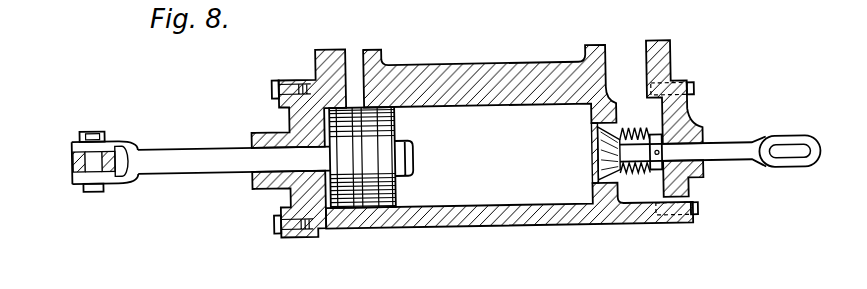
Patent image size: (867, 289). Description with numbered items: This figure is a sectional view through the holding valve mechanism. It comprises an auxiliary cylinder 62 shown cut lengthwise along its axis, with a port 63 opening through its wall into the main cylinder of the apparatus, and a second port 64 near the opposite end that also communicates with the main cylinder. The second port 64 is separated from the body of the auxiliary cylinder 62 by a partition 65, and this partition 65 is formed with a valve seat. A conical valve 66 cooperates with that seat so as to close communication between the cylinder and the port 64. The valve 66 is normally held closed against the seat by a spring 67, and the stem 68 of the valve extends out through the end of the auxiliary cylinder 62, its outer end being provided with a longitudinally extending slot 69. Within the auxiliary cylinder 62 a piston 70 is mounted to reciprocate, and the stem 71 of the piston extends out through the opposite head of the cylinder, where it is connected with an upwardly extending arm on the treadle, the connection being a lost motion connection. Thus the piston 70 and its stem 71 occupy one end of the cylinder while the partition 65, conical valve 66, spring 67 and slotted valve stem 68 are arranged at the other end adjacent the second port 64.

The auxiliary cylinder 62 is at (500, 224).
The port 63 is at (355, 56).
The second port 64 is at (629, 60).
The partition 65 is at (607, 115).
The conical valve 66 is at (595, 158).
The spring 67 is at (616, 178).
The stem 68 is at (731, 149).
The longitudinally extending slot 69 is at (793, 142).
The piston 70 is at (373, 208).
The stem 71 is at (166, 146).